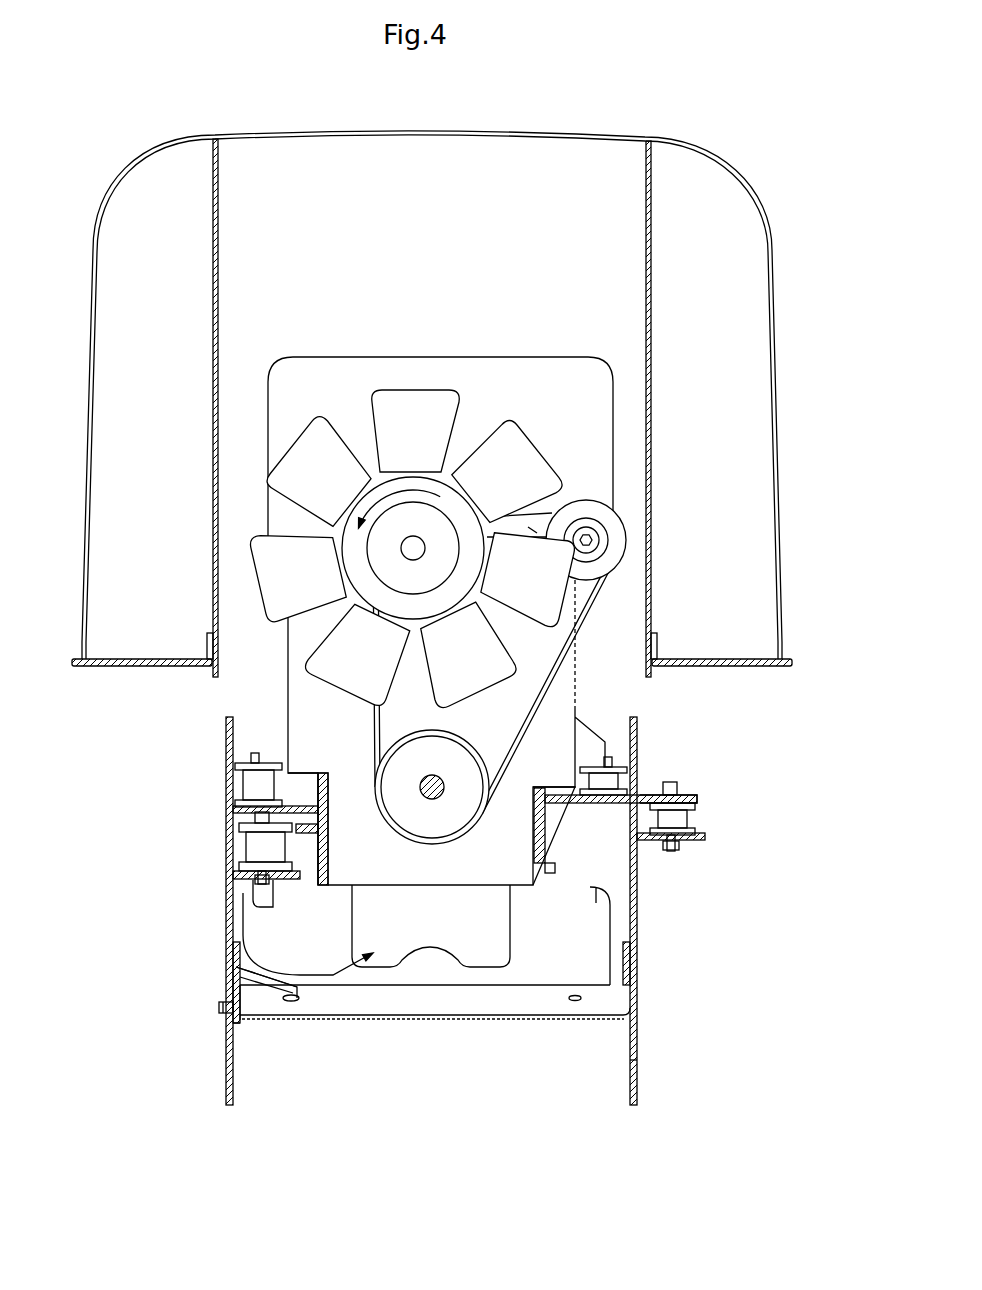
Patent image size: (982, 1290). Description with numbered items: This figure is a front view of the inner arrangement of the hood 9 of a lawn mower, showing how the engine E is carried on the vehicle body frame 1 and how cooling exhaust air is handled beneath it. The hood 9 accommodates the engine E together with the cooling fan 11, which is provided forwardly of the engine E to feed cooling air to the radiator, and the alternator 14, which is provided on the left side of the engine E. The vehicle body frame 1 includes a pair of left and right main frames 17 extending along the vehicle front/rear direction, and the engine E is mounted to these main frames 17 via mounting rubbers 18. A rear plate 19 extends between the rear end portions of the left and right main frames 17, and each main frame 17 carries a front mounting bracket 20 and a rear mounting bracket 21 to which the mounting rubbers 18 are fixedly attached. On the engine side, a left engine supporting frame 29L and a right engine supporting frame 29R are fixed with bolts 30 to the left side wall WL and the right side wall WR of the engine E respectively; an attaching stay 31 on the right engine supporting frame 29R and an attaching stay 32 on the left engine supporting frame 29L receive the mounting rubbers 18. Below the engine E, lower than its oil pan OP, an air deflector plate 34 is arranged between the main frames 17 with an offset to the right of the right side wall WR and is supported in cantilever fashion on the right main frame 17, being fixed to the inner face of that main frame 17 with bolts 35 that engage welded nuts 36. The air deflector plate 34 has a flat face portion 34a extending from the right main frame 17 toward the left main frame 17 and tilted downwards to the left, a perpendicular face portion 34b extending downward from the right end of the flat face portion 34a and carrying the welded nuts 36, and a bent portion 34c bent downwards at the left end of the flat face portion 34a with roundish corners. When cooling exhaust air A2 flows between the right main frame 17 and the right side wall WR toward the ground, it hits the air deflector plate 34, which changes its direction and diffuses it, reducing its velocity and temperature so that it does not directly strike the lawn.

The vehicle body frame 1 is at (650, 1081).
The hood 9 is at (428, 130).
The cooling fan 11 is at (418, 398).
The alternator 14 is at (626, 522).
The main frame 17 is at (227, 1065).
The mounting rubber 18 is at (243, 788).
The rear plate 19 is at (437, 1020).
The front mounting bracket 20 is at (247, 875).
The rear mounting bracket 21 is at (233, 808).
The right engine supporting frame 29R is at (303, 795).
The left engine supporting frame 29L is at (557, 832).
The bolt 30 is at (308, 856).
The attaching stay 31 is at (240, 832).
The attaching stay 32 is at (690, 793).
The air deflector plate 34 is at (305, 958).
The flat face portion 34a is at (284, 957).
The perpendicular face portion 34b is at (242, 993).
The bent portion 34c is at (304, 994).
The bolt 35 is at (212, 1007).
The welded nut 36 is at (247, 1040).
The cooling exhaust air A2 is at (331, 970).
The engine E is at (487, 357).
The oil pan OP is at (505, 922).
The right side wall WR is at (320, 822).
The left side wall WL is at (560, 800).